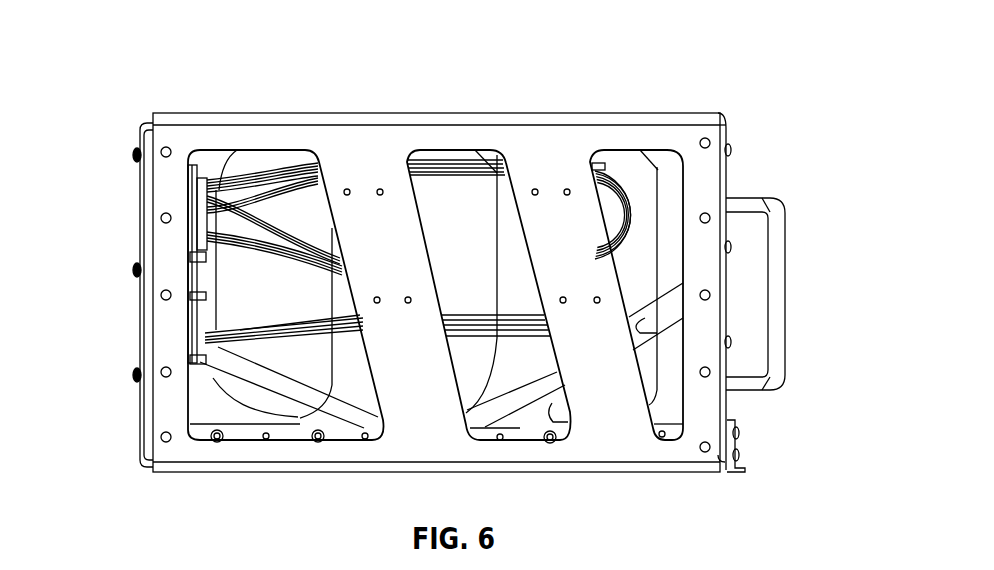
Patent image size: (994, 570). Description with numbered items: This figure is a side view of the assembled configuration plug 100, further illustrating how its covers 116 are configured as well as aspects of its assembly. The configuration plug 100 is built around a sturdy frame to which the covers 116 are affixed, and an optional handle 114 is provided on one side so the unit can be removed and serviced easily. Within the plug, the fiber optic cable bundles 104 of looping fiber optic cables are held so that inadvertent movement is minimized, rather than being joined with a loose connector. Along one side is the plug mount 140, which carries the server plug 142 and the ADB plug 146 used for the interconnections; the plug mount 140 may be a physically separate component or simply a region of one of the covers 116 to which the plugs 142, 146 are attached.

The configuration plug 100 is at (757, 74).
The cover 116 is at (527, 148).
The handle 114 is at (775, 277).
The ADB plug 146 is at (190, 208).
The plug mount 140 is at (190, 276).
The server plug 142 is at (190, 333).
The fiber optic cable bundle 104 is at (236, 333).